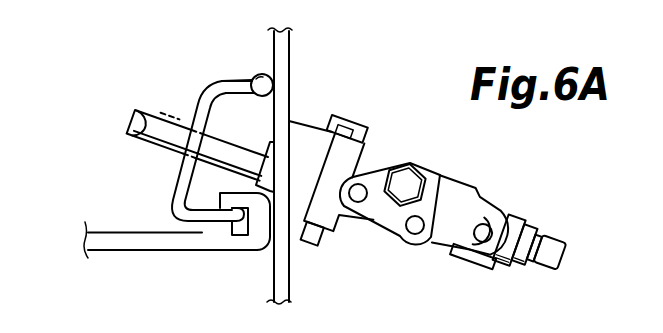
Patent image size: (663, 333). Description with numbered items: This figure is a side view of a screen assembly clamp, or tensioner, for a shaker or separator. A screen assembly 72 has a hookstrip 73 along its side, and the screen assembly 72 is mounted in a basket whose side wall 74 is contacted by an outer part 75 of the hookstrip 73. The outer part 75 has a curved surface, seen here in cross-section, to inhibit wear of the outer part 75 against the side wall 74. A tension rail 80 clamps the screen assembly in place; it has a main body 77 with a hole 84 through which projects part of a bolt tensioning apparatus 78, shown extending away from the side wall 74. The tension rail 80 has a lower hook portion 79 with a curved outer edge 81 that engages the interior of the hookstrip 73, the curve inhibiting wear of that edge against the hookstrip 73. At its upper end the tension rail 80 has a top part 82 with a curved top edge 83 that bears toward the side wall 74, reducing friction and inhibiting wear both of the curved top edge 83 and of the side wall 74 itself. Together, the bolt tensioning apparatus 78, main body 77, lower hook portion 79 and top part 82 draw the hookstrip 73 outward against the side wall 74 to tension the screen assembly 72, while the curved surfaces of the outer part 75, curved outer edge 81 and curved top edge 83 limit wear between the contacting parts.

The screen assembly 72 is at (128, 252).
The hookstrip 73 is at (232, 193).
The side wall 74 is at (272, 52).
The outer part 75 is at (276, 236).
The main body 77 is at (177, 187).
The bolt tensioning apparatus 78 is at (157, 153).
The lower hook portion 79 is at (202, 220).
The tension rail 80 is at (200, 103).
The curved outer edge 81 is at (238, 222).
The top part 82 is at (218, 82).
The curved top edge 83 is at (263, 73).
The hole 84 is at (153, 110).